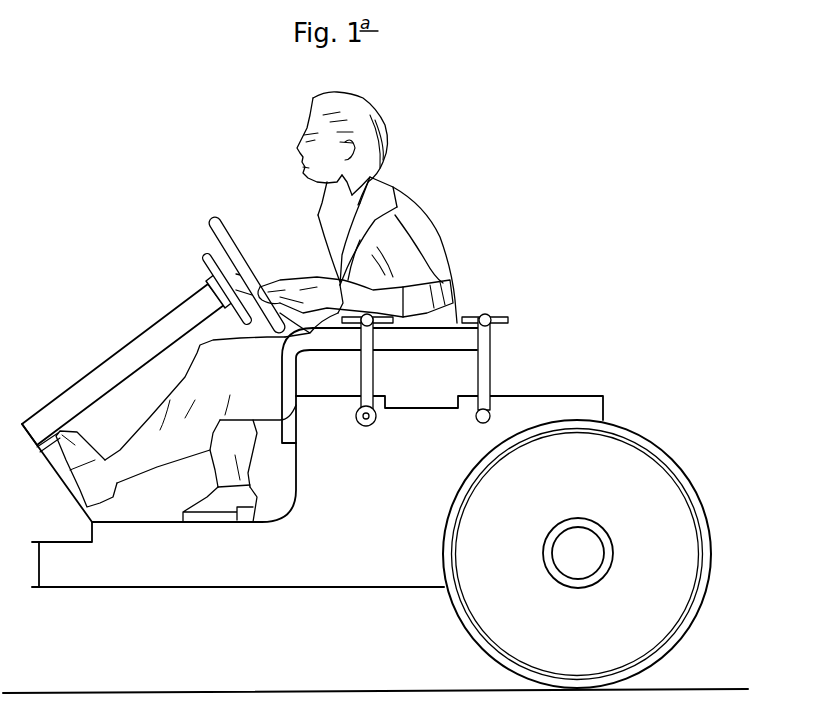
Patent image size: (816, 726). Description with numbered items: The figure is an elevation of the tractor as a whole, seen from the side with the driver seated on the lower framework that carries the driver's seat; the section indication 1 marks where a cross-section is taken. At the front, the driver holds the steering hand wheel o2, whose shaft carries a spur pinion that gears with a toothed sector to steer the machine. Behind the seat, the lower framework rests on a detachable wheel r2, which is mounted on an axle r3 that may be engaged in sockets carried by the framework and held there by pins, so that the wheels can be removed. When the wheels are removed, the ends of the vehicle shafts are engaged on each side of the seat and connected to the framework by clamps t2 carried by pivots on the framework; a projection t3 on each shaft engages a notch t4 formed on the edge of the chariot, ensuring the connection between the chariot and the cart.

The steering hand wheel o2 is at (220, 235).
The clamp t2 is at (483, 370).
The projection t3 is at (367, 373).
The notch t4 is at (410, 408).
The detachable wheel r2 is at (577, 554).
The axle r3 is at (572, 558).
The section line 1- 1 is at (27, 667).